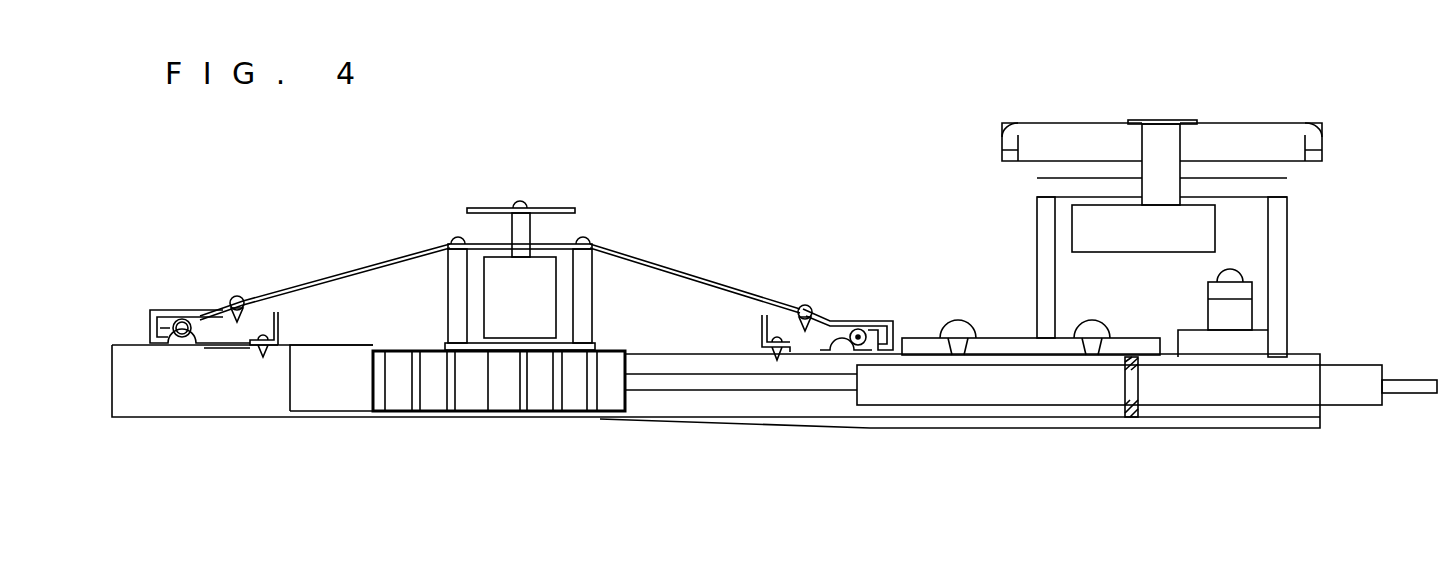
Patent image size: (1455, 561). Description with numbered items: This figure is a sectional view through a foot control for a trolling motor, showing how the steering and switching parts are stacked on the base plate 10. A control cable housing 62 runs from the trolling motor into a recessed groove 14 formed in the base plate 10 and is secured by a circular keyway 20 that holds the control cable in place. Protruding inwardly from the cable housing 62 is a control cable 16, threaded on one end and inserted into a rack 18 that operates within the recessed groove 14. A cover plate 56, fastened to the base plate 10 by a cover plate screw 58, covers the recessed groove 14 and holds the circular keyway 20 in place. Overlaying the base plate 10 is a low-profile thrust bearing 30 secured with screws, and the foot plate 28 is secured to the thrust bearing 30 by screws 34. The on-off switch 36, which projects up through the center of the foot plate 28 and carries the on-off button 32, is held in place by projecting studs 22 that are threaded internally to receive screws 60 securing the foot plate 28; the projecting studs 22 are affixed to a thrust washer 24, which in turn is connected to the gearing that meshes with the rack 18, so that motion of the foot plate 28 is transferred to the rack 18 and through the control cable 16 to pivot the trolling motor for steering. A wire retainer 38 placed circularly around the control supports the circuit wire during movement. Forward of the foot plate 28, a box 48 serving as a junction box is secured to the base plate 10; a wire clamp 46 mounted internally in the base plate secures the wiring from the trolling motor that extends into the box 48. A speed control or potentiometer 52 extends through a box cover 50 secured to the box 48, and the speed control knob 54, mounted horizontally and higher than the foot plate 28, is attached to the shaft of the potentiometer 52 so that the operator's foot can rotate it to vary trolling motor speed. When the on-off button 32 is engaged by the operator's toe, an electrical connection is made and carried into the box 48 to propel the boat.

The base plate 10 is at (218, 387).
The recessed groove 14 is at (335, 380).
The control cable 16 is at (698, 383).
The rack 18 is at (500, 397).
The circular keyway 20 is at (1134, 412).
The projecting studs 22 is at (455, 280).
The thrust washer 24 is at (448, 344).
The foot plate 28 is at (717, 287).
The thrust bearing 30 is at (857, 327).
The on-off button 32 is at (552, 207).
The screws 34 is at (232, 302).
The on-off switch 36 is at (545, 272).
The wire retainer 38 is at (760, 335).
The wire clamp 46 is at (1242, 287).
The box 48 is at (1047, 236).
The box cover 50 is at (1048, 189).
The potentiometer 52 is at (1205, 228).
The speed control knob 54 is at (1000, 147).
The cover plate 56 is at (1022, 347).
The cover plate screw 58 is at (1161, 277).
The screws 60 is at (458, 236).
The control cable housing 62 is at (930, 383).